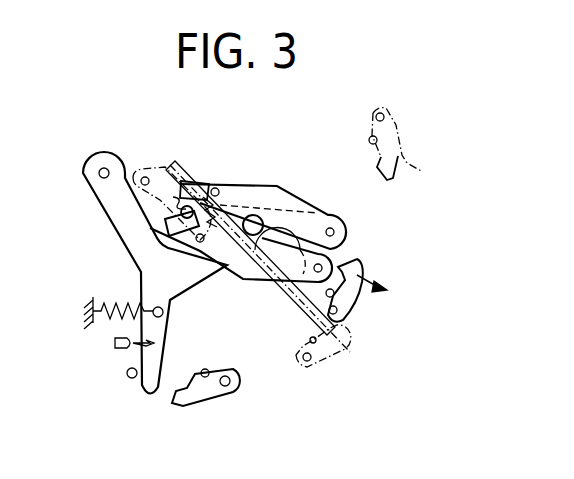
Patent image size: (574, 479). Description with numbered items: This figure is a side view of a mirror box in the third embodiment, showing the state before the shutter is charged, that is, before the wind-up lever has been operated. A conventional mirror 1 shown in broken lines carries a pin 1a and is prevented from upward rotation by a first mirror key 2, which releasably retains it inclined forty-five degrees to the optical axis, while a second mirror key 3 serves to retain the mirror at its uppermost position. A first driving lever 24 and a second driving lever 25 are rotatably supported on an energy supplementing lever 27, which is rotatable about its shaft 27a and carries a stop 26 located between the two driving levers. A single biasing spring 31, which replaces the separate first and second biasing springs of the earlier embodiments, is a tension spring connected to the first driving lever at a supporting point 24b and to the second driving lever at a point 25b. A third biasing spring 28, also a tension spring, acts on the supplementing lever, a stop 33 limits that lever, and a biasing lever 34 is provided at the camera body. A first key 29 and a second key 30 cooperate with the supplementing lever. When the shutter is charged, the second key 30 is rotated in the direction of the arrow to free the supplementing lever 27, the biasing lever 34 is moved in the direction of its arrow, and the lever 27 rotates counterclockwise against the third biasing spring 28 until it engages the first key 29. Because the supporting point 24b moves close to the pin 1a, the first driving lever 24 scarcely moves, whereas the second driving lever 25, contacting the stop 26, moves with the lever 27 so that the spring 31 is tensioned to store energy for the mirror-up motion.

The mirror 1 is at (300, 320).
The pin 1a is at (172, 203).
The first mirror key 2 is at (347, 352).
The second mirror key 3 is at (402, 150).
The first driving lever 24 is at (238, 265).
The supporting point 24b is at (200, 243).
The second driving lever 25 is at (258, 195).
The connection point 25b is at (215, 188).
The stop 26 is at (254, 225).
The energy supplementing lever 27 is at (123, 218).
The shaft 27a is at (104, 167).
The third biasing spring 28 is at (115, 301).
The first key 29 is at (214, 396).
The second key 30 is at (356, 266).
The single biasing spring 31 is at (199, 182).
The stop 33 is at (126, 373).
The biasing lever 34 is at (115, 343).